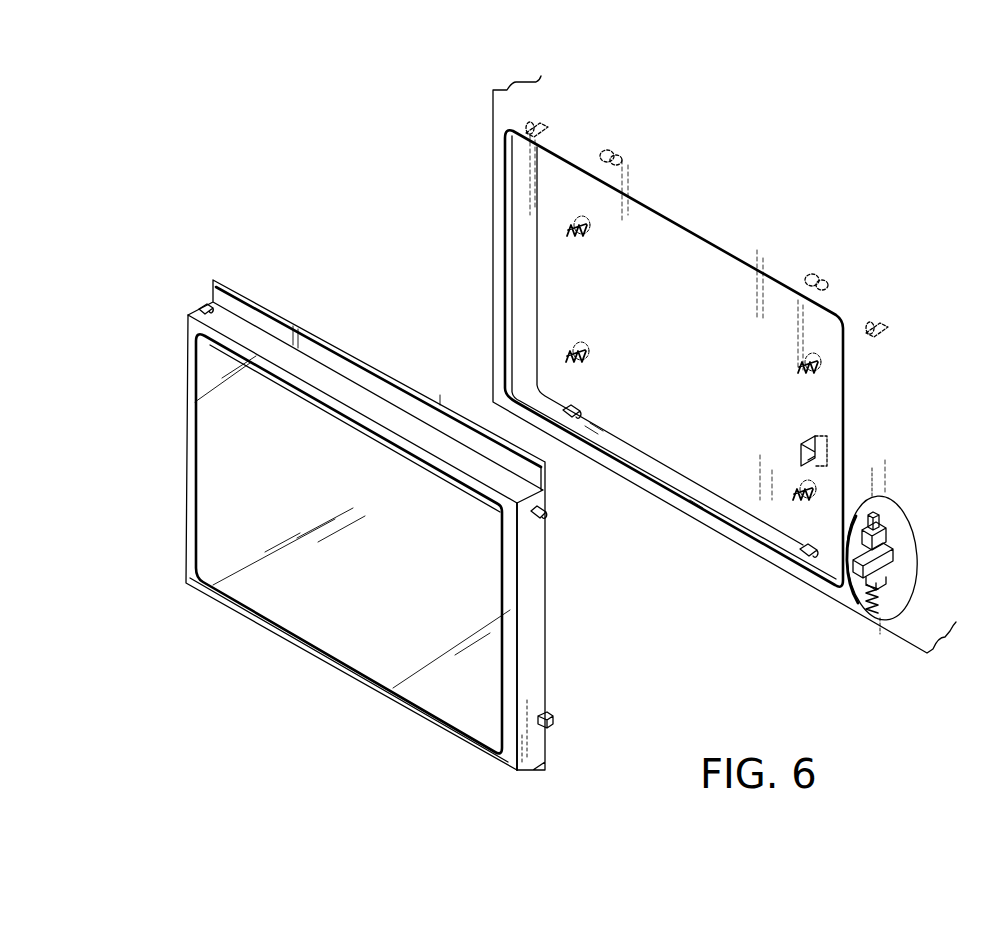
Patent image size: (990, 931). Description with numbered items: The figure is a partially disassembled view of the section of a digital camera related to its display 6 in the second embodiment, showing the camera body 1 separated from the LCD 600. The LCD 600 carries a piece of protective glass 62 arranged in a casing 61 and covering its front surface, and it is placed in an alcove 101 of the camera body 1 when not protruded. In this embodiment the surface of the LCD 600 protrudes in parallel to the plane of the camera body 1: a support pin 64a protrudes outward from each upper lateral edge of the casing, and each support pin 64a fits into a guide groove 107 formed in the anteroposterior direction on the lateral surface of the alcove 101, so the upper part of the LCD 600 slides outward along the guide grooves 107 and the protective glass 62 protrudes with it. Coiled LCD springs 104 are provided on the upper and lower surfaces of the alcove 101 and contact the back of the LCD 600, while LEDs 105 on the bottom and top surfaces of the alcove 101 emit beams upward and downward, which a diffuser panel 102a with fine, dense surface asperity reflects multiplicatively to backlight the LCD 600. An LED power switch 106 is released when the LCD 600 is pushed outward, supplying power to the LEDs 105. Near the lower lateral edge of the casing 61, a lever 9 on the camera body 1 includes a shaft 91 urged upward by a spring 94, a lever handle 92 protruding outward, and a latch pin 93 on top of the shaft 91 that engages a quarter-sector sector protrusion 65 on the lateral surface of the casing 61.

The camera body 1 is at (493, 147).
The display 6 is at (251, 634).
The LCD 600 is at (215, 484).
The casing 61 is at (537, 628).
The protective glass 62 is at (372, 657).
The support pin 64a is at (203, 281).
The sector protrusion 65 is at (550, 721).
The alcove 101 is at (730, 258).
The diffuser panel 102a is at (752, 292).
The LCD spring 104 is at (582, 238).
The LED 105 is at (628, 132).
The LED power switch 106 is at (830, 443).
The guide groove 107 is at (565, 103).
The lever 9 is at (874, 566).
The shaft 91 is at (887, 533).
The lever handle 92 is at (848, 588).
The latch pin 93 is at (873, 517).
The spring 94 is at (873, 613).